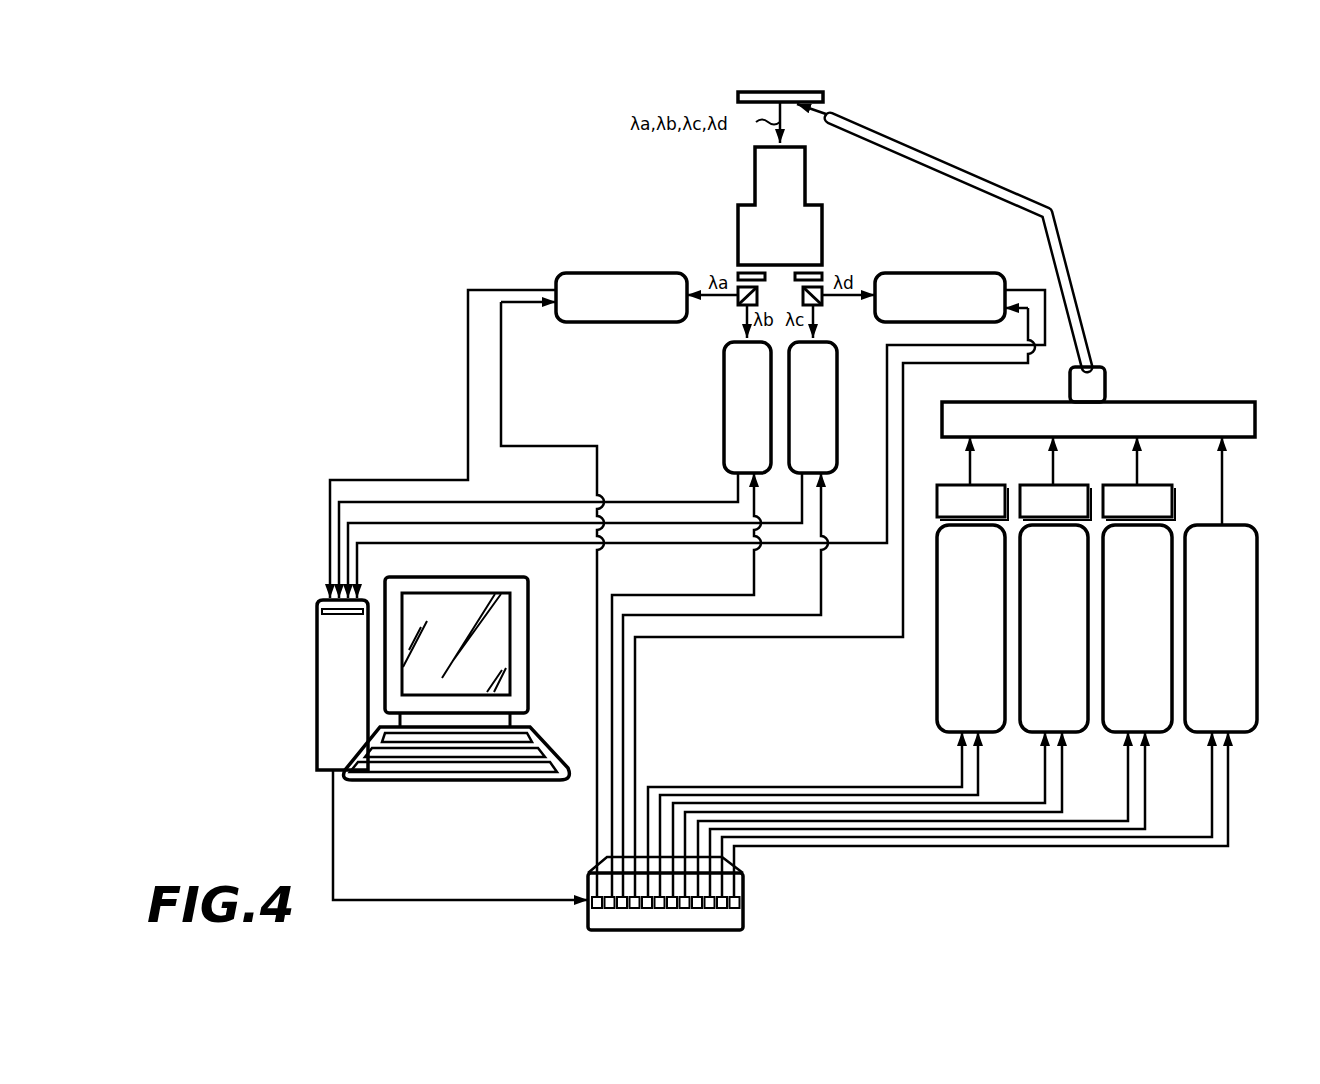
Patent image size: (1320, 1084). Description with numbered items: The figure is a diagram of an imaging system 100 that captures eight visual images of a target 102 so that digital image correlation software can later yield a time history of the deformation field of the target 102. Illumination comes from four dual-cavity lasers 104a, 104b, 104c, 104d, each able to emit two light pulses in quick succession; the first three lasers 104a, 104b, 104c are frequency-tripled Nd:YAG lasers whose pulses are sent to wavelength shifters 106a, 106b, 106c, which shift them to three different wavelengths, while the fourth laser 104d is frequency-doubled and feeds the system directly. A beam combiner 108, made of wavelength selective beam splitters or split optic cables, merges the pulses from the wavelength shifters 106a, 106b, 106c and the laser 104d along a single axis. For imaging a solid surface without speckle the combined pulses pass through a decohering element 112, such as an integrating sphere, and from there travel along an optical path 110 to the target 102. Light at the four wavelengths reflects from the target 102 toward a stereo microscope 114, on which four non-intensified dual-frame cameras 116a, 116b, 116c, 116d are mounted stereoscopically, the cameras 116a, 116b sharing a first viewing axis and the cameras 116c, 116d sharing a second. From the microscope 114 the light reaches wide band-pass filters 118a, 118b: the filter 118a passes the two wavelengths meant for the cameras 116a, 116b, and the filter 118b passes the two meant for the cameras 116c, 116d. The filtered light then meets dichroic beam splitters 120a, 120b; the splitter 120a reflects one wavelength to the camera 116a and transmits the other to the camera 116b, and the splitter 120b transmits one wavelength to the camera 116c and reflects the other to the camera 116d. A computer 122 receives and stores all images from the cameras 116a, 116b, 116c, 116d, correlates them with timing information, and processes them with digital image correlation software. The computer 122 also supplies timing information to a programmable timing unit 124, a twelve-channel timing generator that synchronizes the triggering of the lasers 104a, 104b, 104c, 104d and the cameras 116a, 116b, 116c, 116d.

The imaging system 100 is at (1146, 119).
The target 102 is at (774, 91).
The dual-cavity laser 104a is at (953, 713).
The dual-cavity laser 104b is at (1036, 713).
The dual-cavity laser 104c is at (1119, 713).
The dual-cavity laser 104d is at (1202, 713).
The wavelength shifter 106a is at (972, 502).
The wavelength shifter 106b is at (1055, 502).
The wavelength shifter 106c is at (1139, 502).
The beam combiner 108 is at (1243, 402).
The optical path 110 is at (1063, 224).
The decohering element 112 is at (1105, 380).
The stereo microscope 114 is at (822, 208).
The dual-frame camera 116a is at (622, 272).
The dual-frame camera 116b is at (724, 419).
The dual-frame camera 116c is at (837, 419).
The dual-frame camera 116d is at (945, 273).
The wide band-pass filter 118a is at (740, 274).
The wide band-pass filter 118b is at (820, 274).
The dichroic beam splitter 120a is at (740, 298).
The dichroic beam splitter 120b is at (820, 298).
The computer 122 is at (343, 659).
The programmable timing unit 124 is at (745, 902).